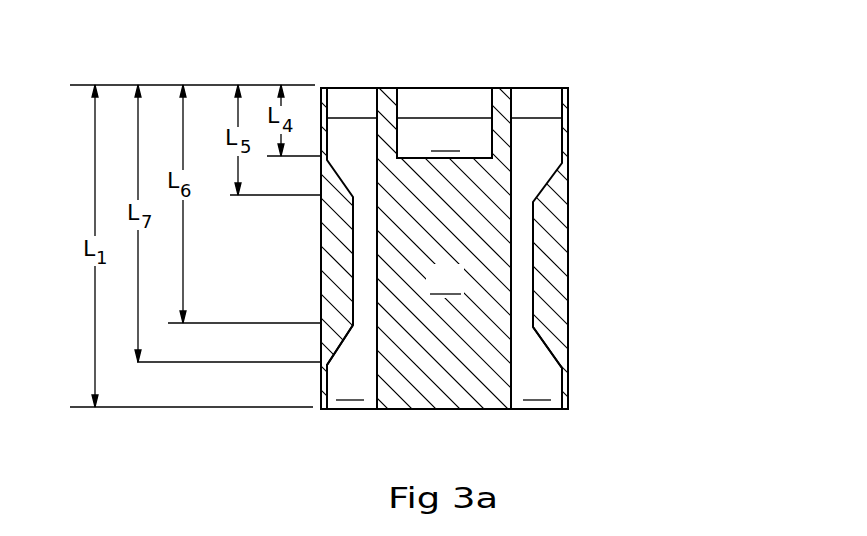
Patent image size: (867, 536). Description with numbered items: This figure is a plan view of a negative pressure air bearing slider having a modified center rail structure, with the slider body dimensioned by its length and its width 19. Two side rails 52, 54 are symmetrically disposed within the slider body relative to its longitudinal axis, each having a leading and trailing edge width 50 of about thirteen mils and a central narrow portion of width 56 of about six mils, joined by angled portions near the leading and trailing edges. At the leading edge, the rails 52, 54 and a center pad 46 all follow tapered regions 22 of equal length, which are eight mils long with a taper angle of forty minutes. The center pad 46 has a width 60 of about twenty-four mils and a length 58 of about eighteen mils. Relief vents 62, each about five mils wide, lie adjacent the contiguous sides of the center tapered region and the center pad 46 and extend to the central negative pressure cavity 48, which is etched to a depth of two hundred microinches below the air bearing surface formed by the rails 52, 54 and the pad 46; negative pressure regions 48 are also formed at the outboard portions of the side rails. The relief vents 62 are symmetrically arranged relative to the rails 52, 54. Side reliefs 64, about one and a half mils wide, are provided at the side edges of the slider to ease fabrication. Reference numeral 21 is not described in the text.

The width 19 is at (567, 412).
The top end face 21 is at (474, 88).
The tapered region 22 is at (367, 87).
The center pad 46 is at (444, 123).
The negative pressure cavity 48 is at (342, 222).
The leading and trailing edge width 50 is at (343, 87).
The side rail 52 is at (345, 367).
The side rail 54 is at (542, 368).
The central narrow portion width 56 is at (358, 290).
The center pad length 58 is at (492, 150).
The center pad width 60 is at (452, 160).
The relief vent 62 is at (388, 88).
The side relief 64 is at (321, 87).